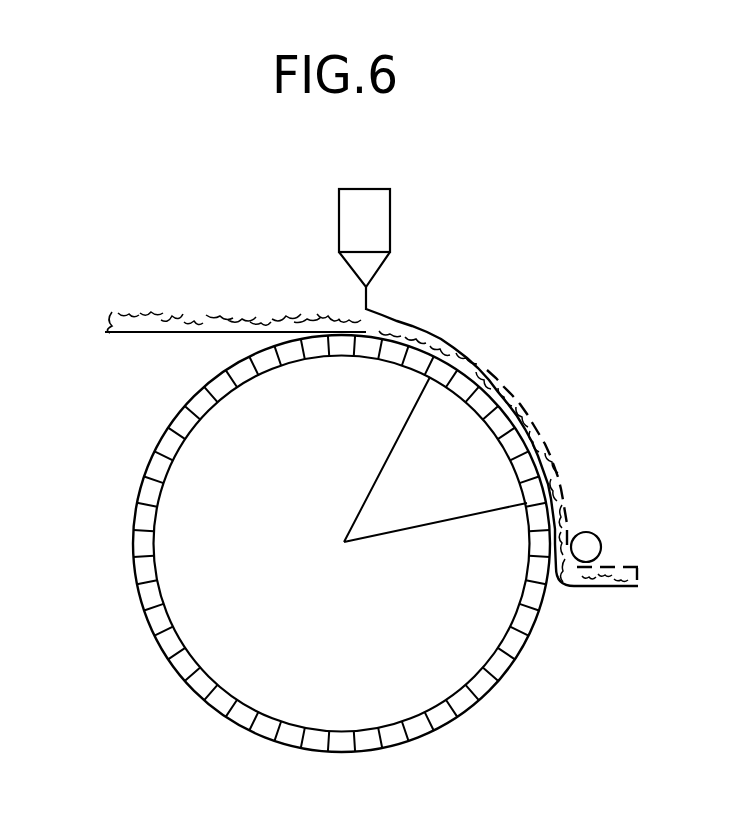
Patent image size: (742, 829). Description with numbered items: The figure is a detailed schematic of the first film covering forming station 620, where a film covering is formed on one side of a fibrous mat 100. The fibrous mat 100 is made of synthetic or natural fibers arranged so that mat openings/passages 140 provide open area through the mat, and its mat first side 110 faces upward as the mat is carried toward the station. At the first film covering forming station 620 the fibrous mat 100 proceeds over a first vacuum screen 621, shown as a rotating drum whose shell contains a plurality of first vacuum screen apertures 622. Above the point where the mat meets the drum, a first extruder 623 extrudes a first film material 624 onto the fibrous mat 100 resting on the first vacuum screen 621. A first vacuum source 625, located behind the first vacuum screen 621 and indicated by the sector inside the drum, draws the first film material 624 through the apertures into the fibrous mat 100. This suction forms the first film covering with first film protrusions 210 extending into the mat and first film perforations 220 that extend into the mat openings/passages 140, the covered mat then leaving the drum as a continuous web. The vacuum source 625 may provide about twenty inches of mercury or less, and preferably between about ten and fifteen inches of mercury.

The fibrous mat 100 is at (136, 318).
The mat first side 110 is at (303, 294).
The mat openings/passages 140 is at (210, 311).
The first film protrusions 210 is at (483, 365).
The first film perforations 220 is at (518, 400).
The first film covering forming station 620 is at (350, 553).
The first vacuum screen 621 is at (493, 695).
The first vacuum screen apertures 622 is at (513, 650).
The first extruder 623 is at (338, 212).
The first film material 624 is at (368, 305).
The first vacuum source 625 is at (459, 480).